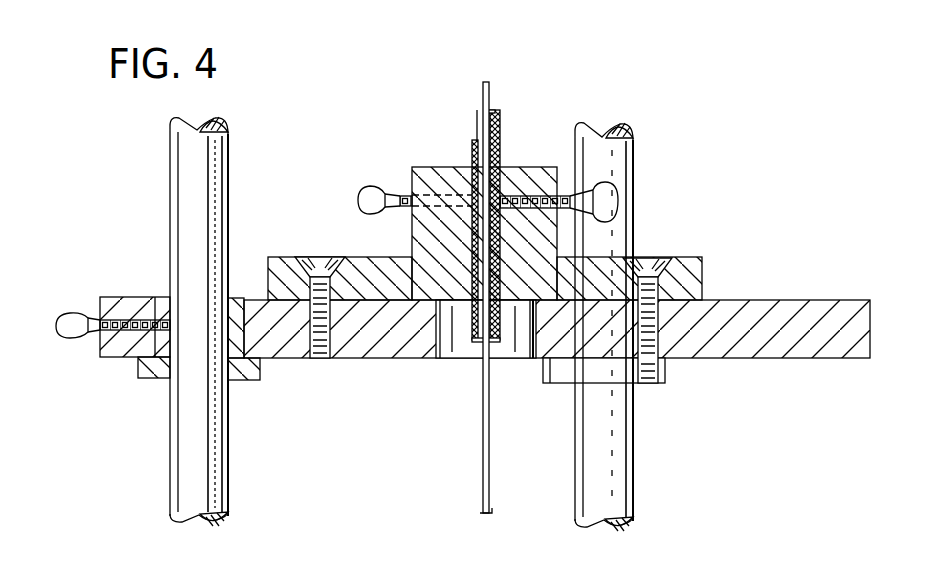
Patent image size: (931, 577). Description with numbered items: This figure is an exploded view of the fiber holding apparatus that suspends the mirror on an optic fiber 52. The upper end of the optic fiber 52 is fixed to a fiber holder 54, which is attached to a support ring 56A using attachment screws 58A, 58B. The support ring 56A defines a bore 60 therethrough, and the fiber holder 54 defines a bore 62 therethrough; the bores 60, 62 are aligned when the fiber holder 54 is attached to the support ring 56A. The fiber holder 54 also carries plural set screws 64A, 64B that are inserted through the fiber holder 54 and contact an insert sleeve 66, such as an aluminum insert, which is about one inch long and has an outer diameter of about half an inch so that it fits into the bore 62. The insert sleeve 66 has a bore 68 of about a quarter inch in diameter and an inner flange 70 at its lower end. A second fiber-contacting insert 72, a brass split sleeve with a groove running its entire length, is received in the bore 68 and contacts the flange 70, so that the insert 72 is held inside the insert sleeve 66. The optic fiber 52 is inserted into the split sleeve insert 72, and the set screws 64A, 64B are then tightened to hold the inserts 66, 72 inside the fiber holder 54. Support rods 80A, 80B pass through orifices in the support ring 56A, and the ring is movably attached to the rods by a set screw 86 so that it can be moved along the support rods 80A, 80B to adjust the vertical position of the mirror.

The optic fiber 52 is at (482, 460).
The fiber holder 54 is at (530, 150).
The support ring 56A is at (786, 312).
The attachment screw 58A is at (317, 262).
The attachment screw 58B is at (655, 258).
The bore 60 is at (452, 355).
The bore 62 is at (466, 165).
The set screw 64A is at (365, 188).
The set screw 64B is at (610, 188).
The insert sleeve 66 is at (497, 110).
The bore 68 is at (470, 143).
The inner flange 70 is at (495, 345).
The fiber-contacting insert 72 is at (477, 110).
The support rod 80A is at (215, 466).
The support rod 80B is at (620, 466).
The set screw 86 is at (62, 307).